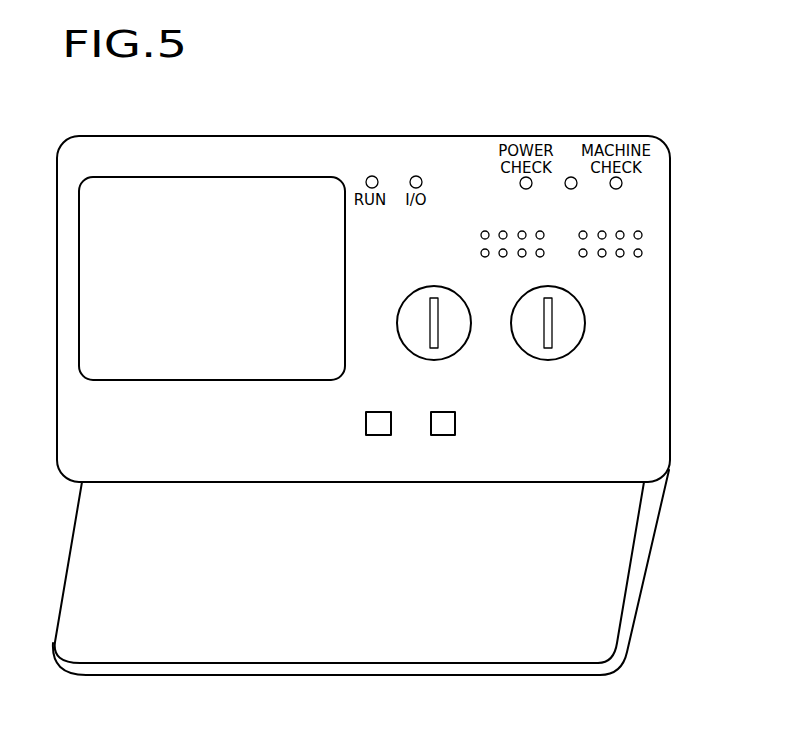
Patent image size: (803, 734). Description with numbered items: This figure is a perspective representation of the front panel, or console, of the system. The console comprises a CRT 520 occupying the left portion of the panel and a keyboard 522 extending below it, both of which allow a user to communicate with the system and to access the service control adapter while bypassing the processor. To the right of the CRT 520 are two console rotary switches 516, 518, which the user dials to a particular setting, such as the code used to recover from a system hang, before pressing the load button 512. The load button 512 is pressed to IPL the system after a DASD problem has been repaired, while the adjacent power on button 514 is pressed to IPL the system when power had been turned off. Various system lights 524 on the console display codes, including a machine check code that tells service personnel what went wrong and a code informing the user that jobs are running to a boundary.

The load button 512 is at (455, 420).
The power on button 514 is at (366, 420).
The console rotary switch 516 is at (433, 287).
The console rotary switch 518 is at (553, 359).
The CRT 520 is at (212, 381).
The keyboard 522 is at (633, 563).
The system lights 524 is at (652, 257).